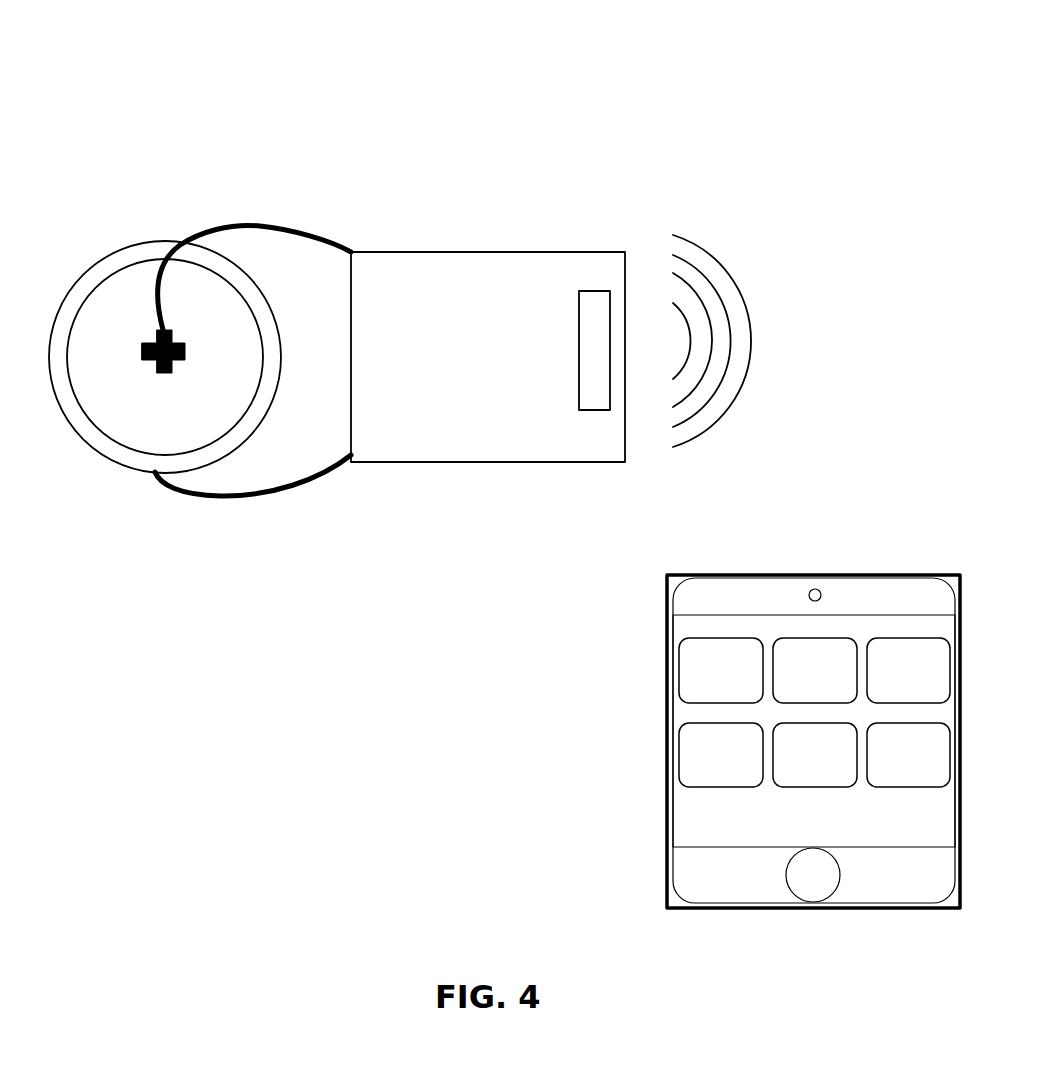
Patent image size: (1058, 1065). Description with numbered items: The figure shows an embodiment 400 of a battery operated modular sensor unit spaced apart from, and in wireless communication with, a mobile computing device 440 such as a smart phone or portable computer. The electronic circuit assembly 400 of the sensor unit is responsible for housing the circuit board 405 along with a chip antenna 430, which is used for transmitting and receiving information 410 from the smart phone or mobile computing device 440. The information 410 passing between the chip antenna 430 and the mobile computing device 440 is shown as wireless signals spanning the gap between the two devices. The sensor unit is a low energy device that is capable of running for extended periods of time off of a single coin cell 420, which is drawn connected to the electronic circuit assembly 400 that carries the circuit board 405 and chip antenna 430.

The electronic circuit assembly 400 is at (305, 118).
The circuit board 405 is at (515, 262).
The information 410 is at (707, 425).
The coin cell 420 is at (133, 350).
The chip antenna 430 is at (598, 300).
The mobile computing device 440 is at (755, 607).